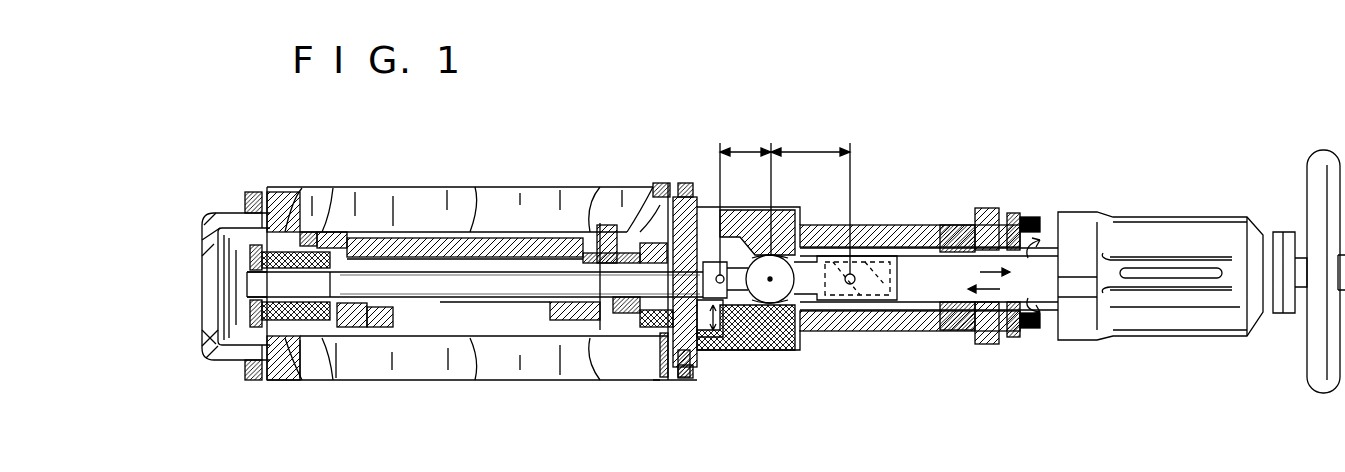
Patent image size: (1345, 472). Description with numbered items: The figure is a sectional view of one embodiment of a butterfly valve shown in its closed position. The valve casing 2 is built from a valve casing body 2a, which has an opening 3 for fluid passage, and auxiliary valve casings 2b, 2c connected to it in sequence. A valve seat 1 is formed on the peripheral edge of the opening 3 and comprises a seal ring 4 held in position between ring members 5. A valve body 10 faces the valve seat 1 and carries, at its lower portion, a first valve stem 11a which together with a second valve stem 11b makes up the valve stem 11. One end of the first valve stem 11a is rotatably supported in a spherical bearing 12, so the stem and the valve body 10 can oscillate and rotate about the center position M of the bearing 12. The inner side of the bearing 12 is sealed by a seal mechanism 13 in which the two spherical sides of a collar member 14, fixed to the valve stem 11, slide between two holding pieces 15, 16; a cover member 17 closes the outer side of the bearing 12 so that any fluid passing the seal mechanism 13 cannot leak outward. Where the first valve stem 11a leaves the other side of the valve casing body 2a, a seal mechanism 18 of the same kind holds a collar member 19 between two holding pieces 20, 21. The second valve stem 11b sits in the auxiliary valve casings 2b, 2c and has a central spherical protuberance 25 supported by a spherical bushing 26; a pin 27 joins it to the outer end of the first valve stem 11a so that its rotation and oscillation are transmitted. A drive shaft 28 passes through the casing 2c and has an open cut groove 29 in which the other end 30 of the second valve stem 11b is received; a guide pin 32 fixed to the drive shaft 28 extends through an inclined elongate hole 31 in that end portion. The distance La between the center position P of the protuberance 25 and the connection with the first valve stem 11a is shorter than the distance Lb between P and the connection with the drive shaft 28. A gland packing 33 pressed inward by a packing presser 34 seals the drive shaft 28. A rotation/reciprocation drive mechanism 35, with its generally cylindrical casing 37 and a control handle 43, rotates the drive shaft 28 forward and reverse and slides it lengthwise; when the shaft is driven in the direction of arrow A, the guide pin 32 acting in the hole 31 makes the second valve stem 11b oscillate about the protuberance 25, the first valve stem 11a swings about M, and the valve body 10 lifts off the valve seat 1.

The valve seat 1 is at (565, 205).
The valve casing 2 is at (660, 188).
The valve casing body 2a is at (648, 188).
The auxiliary valve casing 2b is at (702, 205).
The auxiliary valve casing 2c is at (940, 212).
The opening 3 is at (393, 190).
The seal ring 4 is at (335, 232).
The ring members 5 is at (300, 232).
The valve body 10 is at (515, 236).
The valve stem 11 is at (500, 292).
The first valve stem 11a is at (448, 300).
The second valve stem 11b is at (818, 332).
The spherical bearing 12 is at (252, 310).
The seal mechanism 13 is at (340, 330).
The collar member 14 is at (330, 330).
The holding piece 15 is at (298, 378).
The holding piece 16 is at (333, 333).
The cover member 17 is at (205, 230).
The seal mechanism 18 is at (642, 318).
The collar member 19 is at (650, 313).
The holding piece 20 is at (633, 328).
The holding piece 21 is at (682, 347).
The spherical protuberance 25 is at (762, 350).
The spherical bushing 26 is at (797, 350).
The pin 27 is at (733, 350).
The drive shaft 28 is at (945, 310).
The open cut groove 29 is at (917, 330).
The other end 30 is at (878, 330).
The inclined elongate hole 31 is at (893, 257).
The guide pin 32 is at (851, 274).
The gland packing 33 is at (950, 228).
The packing presser 34 is at (1017, 213).
The rotation/reciprocation drive mechanism 35 is at (1188, 219).
The casing 37 is at (1142, 227).
The control handle 43 is at (1320, 173).
The center position M is at (250, 296).
The center position P is at (771, 279).
The arrow A is at (1028, 300).
The distance La is at (745, 197).
The distance Lb is at (810, 198).